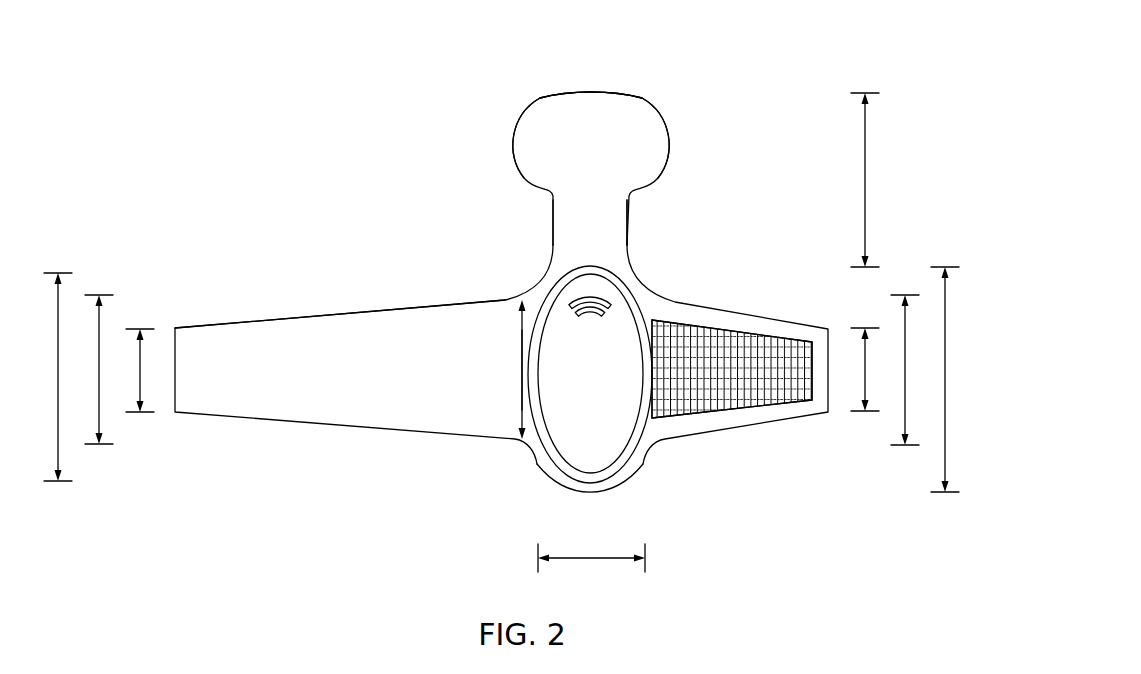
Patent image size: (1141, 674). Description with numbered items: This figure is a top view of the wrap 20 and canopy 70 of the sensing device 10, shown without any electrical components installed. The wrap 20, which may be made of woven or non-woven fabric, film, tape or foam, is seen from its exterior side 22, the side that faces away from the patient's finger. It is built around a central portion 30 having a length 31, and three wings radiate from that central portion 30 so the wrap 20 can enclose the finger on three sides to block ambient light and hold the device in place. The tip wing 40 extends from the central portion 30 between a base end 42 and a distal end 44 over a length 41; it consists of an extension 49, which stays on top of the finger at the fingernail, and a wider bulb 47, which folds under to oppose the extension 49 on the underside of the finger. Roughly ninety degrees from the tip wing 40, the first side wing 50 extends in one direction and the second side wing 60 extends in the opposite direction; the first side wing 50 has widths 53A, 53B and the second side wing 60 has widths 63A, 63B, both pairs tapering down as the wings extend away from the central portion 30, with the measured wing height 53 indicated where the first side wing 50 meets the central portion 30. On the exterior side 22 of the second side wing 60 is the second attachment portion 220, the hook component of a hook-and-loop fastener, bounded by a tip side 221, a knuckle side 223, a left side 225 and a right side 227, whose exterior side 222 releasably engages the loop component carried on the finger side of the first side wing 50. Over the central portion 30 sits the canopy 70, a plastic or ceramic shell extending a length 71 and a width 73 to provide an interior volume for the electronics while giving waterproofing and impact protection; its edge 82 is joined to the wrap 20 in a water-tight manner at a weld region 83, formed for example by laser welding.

The sensing device 10 is at (714, 55).
The wrap 20 is at (423, 448).
The exterior side 22 is at (347, 344).
The central portion 30 is at (614, 484).
The length 31 is at (940, 460).
The tip wing 40 is at (667, 187).
The length 41 is at (866, 176).
The base end 42 is at (541, 254).
The distal end 44 is at (557, 82).
The bulb 47 is at (657, 133).
The extension 49 is at (619, 228).
The first side wing 50 is at (242, 400).
The first band junction height 53 is at (521, 365).
The width 53A is at (141, 373).
The width 53B is at (100, 395).
The second side wing 60 is at (786, 411).
The width 63A is at (862, 376).
The width 63B is at (900, 405).
The canopy 70 is at (565, 450).
The length 71 is at (59, 437).
The width 73 is at (594, 560).
The edge 82 is at (521, 298).
The weld region 83 is at (640, 441).
The second attachment portion 220 is at (736, 321).
The tip side 221 is at (698, 323).
The exterior side 222 is at (768, 336).
The knuckle side 223 is at (703, 414).
The left side 225 is at (643, 327).
The right side 227 is at (812, 343).